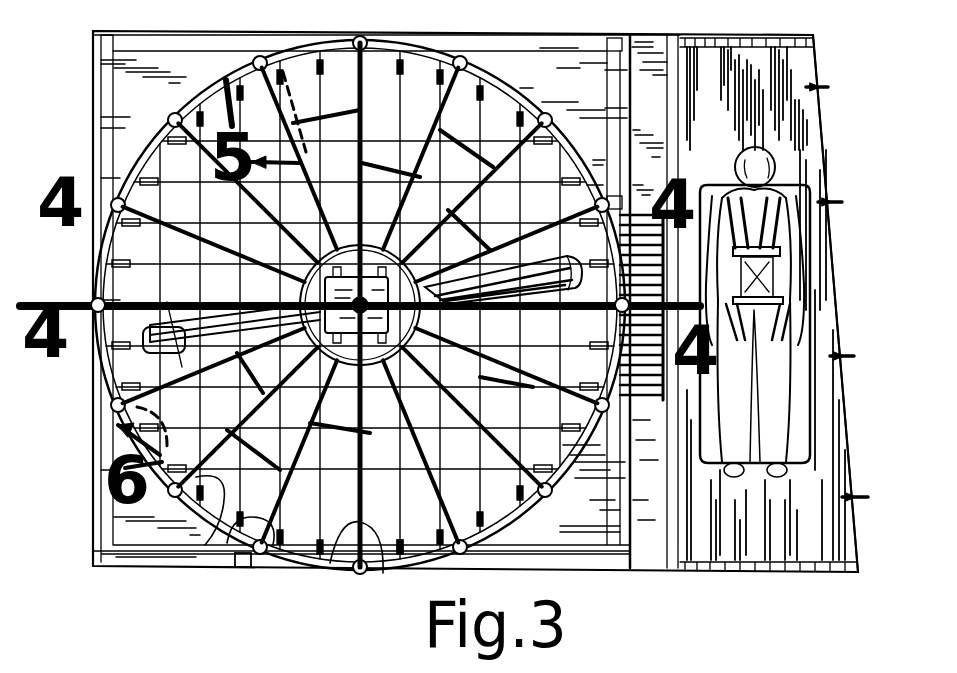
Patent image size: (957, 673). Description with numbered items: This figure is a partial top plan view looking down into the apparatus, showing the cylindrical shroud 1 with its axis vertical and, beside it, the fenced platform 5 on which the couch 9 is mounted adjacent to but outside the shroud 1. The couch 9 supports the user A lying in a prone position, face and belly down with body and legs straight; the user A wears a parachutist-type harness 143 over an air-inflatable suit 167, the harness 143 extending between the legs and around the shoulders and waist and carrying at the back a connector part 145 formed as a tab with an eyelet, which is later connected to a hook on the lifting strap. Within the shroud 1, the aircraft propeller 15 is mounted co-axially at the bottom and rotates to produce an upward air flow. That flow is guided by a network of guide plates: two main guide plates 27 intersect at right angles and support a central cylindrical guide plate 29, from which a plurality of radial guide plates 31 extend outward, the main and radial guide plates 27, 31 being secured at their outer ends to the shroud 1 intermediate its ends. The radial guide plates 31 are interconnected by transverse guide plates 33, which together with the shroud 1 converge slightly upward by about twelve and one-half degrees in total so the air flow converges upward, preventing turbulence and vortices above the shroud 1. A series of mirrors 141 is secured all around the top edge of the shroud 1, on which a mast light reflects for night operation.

The cylindrical shroud 1 is at (300, 558).
The fenced platform 5 is at (828, 428).
The couch 9 is at (812, 378).
The aircraft propeller 15 is at (142, 340).
The main guide plates 27 is at (332, 562).
The central cylindrical guide plate 29 is at (345, 395).
The radial guide plates 31 is at (205, 545).
The transverse guide plates 33 is at (390, 545).
The mirrors 141 is at (243, 567).
The harness 143 is at (775, 236).
The connector part 145 is at (778, 262).
The air-inflatable suit 167 is at (790, 360).
The user A is at (787, 182).